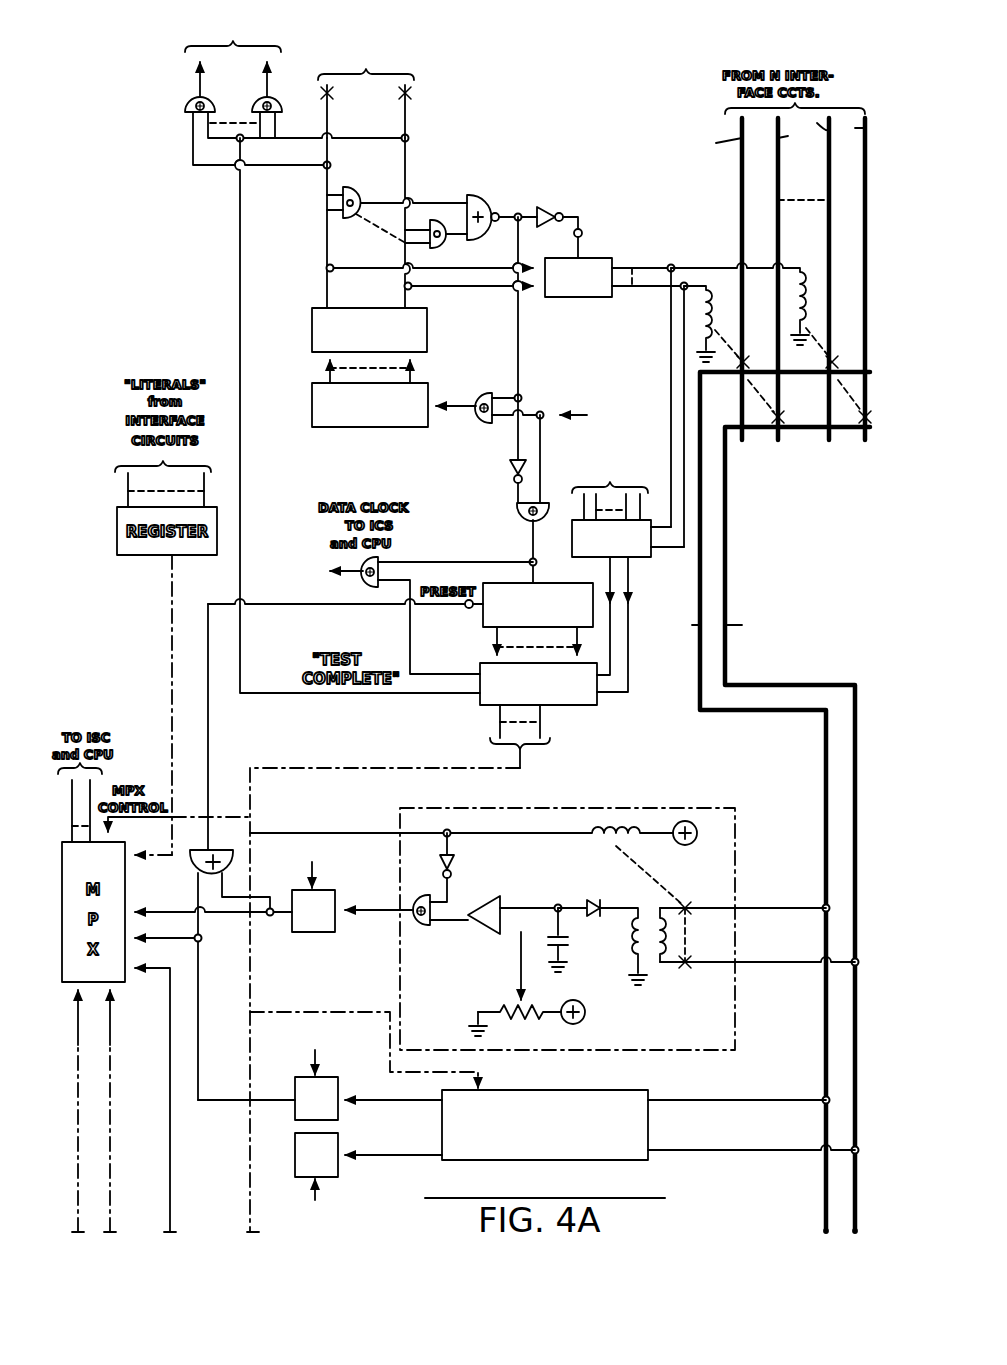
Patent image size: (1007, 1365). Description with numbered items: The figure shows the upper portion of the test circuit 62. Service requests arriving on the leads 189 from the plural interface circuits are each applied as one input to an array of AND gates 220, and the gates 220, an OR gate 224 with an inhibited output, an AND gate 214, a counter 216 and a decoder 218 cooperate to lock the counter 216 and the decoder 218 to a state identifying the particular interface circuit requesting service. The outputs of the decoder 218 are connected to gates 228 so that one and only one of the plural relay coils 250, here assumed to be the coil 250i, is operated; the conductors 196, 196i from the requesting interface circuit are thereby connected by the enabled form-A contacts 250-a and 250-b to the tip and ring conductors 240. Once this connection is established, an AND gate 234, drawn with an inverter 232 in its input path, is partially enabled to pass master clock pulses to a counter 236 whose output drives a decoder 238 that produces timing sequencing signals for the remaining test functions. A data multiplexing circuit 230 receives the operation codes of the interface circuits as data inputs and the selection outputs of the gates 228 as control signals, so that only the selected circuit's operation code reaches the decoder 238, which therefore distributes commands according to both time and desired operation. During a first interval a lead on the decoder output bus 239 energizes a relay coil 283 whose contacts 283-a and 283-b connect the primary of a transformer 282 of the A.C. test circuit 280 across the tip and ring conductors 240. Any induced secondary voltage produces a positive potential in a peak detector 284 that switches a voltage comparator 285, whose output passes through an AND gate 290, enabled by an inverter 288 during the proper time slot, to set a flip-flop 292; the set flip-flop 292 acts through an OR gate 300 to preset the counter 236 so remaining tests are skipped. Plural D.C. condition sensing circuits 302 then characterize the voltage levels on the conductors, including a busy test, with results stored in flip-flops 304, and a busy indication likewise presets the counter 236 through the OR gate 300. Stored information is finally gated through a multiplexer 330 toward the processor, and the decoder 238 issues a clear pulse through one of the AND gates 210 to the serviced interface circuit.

The AND gates 210 is at (248, 90).
The leads 189 is at (393, 79).
The AND gates 220 is at (382, 257).
The OR gate 224 is at (484, 196).
The gates 228 is at (570, 300).
The decoder 218 is at (312, 320).
The counter 216 is at (346, 427).
The AND gate 214 is at (476, 425).
The inverter 232 is at (510, 469).
The AND gate 234 is at (516, 518).
The data multiplexing circuit 230 is at (642, 557).
The counter 236 is at (480, 627).
The decoder 238 is at (585, 705).
The decoder output bus 239 is at (378, 768).
The conductors 196 is at (748, 184).
The conductors 196i is at (835, 168).
The relay coils 250 is at (710, 296).
The relay coil 250i is at (808, 270).
The form-A contact 250-a is at (808, 378).
The form-A contact 250-b is at (860, 428).
The tip and ring conductors 240 is at (778, 668).
The A.C. test circuit 280 is at (718, 795).
The relay coil 283 is at (596, 842).
The relay contact 283-a is at (687, 906).
The relay contact 283-b is at (688, 968).
The inverter 288 is at (458, 866).
The voltage comparator 285 is at (497, 880).
The AND gate 290 is at (418, 925).
The flip-flop 292 is at (312, 932).
The peak detector 284 is at (570, 946).
The transformer 282 is at (648, 1040).
The OR gate 300 is at (192, 872).
The multiplexer 330 is at (112, 984).
The flip-flops 304 is at (340, 1115).
The D.C. condition sensing circuits 302 is at (602, 1153).
The test circuit 62 is at (457, 1000).